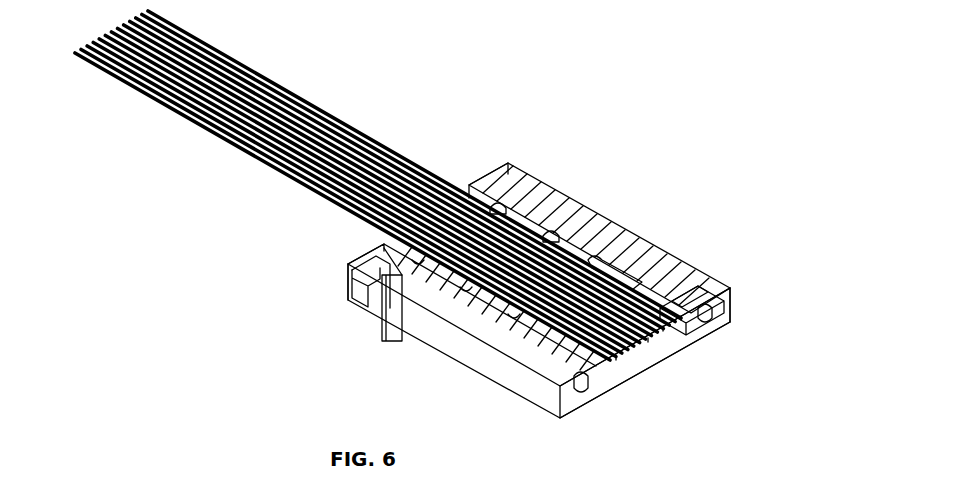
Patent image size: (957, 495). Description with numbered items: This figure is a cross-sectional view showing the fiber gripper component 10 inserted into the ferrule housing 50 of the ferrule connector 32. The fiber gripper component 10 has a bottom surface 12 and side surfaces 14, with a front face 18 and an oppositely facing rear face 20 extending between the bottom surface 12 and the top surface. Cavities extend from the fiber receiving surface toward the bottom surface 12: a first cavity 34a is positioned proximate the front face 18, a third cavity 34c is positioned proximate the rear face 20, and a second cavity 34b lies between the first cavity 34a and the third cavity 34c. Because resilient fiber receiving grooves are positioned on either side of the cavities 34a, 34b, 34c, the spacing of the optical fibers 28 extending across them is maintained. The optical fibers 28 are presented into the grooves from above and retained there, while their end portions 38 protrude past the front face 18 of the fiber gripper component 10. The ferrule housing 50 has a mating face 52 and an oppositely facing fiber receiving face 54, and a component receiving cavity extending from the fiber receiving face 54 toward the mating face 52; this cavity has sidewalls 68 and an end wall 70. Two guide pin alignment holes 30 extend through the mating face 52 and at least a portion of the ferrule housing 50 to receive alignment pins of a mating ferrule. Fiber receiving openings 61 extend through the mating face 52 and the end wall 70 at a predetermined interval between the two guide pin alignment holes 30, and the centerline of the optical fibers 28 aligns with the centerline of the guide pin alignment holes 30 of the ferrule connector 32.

The fiber gripper component 10 is at (584, 220).
The bottom surface 12 is at (512, 398).
The side surfaces 14 is at (452, 303).
The front face 18 is at (700, 283).
The rear face 20 is at (470, 183).
The optical fibers 28 is at (232, 100).
The guide pin alignment holes 30 is at (705, 303).
The ferrule connector 32 is at (712, 338).
The first cavity 34a is at (597, 253).
The second cavity 34b is at (545, 228).
The third cavity 34c is at (493, 198).
The end portions 38 is at (680, 318).
The ferrule housing 50 is at (380, 275).
The mating face 52 is at (712, 305).
The fiber receiving face 54 is at (365, 248).
The fiber receiving openings 61 is at (610, 345).
The sidewalls 68 is at (655, 282).
The end wall 70 is at (515, 340).